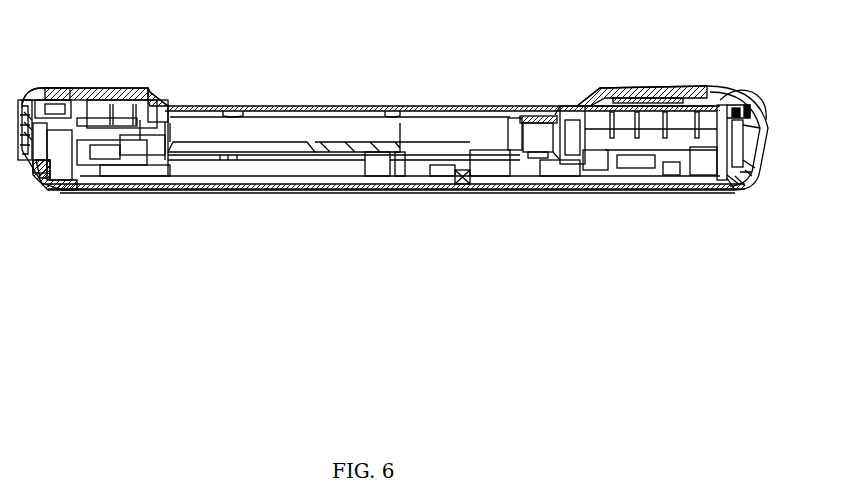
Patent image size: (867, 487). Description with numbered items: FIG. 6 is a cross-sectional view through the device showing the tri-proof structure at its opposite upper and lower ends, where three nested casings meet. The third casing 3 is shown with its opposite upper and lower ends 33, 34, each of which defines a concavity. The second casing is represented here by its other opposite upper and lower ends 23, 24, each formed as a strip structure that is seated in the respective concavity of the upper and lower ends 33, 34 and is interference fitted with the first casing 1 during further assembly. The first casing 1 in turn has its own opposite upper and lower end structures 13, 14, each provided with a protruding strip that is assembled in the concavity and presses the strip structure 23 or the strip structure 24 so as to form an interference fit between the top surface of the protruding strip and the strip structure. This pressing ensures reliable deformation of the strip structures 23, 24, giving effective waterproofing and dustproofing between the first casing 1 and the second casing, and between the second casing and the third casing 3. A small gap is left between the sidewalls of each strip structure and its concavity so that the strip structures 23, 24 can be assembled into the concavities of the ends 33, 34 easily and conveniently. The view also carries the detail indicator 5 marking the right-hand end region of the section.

The first casing 1 is at (463, 185).
The third casing 3 is at (533, 113).
The upper end structure of first casing 13 is at (765, 131).
The lower end structure of first casing 14 is at (40, 178).
The upper end of second casing 23 is at (719, 137).
The lower end of second casing 24 is at (42, 88).
The upper end of third casing 33 is at (745, 100).
The lower end of third casing 34 is at (77, 88).
The gap 5 is at (748, 71).